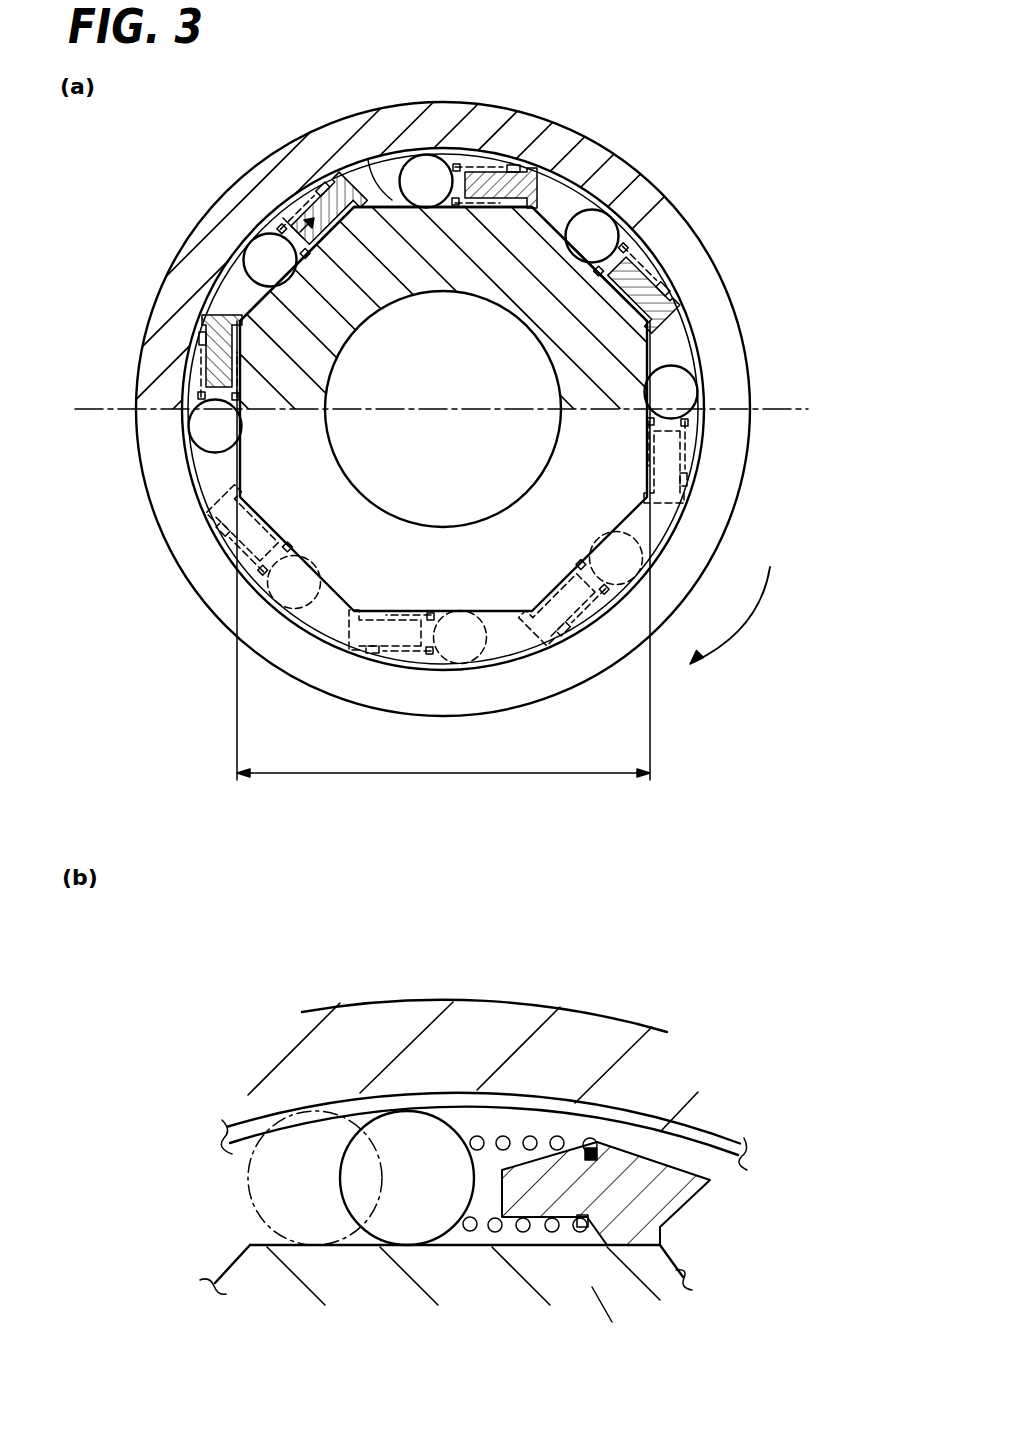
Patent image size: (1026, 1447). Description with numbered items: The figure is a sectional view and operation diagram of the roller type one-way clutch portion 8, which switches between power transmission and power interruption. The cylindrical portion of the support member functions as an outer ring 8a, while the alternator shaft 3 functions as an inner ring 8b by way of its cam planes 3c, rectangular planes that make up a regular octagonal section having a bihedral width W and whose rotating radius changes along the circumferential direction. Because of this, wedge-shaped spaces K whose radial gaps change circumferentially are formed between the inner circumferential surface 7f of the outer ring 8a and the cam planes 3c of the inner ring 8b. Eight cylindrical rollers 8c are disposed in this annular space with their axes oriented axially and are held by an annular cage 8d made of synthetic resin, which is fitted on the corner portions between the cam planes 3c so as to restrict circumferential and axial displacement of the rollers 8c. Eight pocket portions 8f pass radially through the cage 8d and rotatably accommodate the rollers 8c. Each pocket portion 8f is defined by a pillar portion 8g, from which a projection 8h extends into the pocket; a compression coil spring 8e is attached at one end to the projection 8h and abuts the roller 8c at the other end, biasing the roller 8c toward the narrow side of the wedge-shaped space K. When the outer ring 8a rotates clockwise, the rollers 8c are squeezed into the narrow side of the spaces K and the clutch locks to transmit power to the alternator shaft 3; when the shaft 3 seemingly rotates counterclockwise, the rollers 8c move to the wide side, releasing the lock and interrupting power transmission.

The outer ring 8a is at (656, 252).
The one-way clutch portion 8 is at (752, 254).
The annular cage 8d is at (512, 176).
The inner ring 8b is at (630, 358).
The cam planes 3c is at (238, 293).
The alternator shaft 3 is at (613, 1321).
The inner circumferential surface 7f is at (677, 502).
The cylindrical rollers 8c is at (426, 178).
The pocket portions 8f is at (612, 262).
The compression coil springs 8e is at (280, 200).
The pillar portion 8g is at (313, 182).
The projection 8h is at (295, 228).
The wedge-shaped spaces K is at (381, 190).
The bihedral width W is at (443, 550).